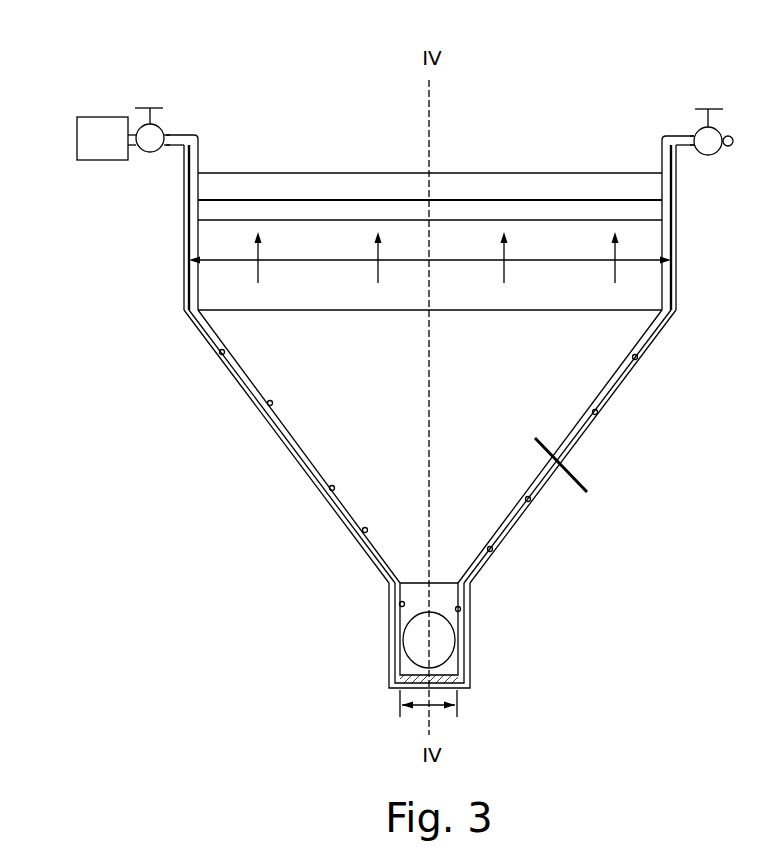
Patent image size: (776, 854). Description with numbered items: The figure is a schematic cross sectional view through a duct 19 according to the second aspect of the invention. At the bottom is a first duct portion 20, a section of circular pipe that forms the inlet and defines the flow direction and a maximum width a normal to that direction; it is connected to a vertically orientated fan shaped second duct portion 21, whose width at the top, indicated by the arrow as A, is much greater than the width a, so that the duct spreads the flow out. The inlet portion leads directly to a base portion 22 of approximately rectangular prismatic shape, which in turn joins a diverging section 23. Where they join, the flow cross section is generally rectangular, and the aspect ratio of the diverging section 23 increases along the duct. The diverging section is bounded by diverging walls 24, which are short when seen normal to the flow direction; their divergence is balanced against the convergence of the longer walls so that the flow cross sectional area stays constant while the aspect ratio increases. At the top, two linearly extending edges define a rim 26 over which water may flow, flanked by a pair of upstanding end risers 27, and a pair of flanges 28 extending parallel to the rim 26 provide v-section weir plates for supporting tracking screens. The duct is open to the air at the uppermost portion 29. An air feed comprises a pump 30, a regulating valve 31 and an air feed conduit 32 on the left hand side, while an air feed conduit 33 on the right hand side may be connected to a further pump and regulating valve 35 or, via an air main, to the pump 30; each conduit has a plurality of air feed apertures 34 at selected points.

The duct 19 is at (280, 488).
The first duct portion 20 is at (420, 622).
The second duct portion 21 is at (573, 480).
The base portion 22 is at (442, 593).
The diverging section 23 is at (310, 407).
The diverging walls 24 is at (580, 438).
The rim 26 is at (370, 173).
The end risers 27 is at (176, 168).
The flanges 28 is at (652, 210).
The uppermost portion 29 is at (430, 204).
The pump 30 is at (98, 113).
The regulating valve 31 is at (155, 107).
The air feed conduit 32 is at (198, 134).
The air feed conduit 33 is at (679, 132).
The air feed apertures 34 is at (222, 350).
The further pump and regulating valve 35 is at (716, 108).